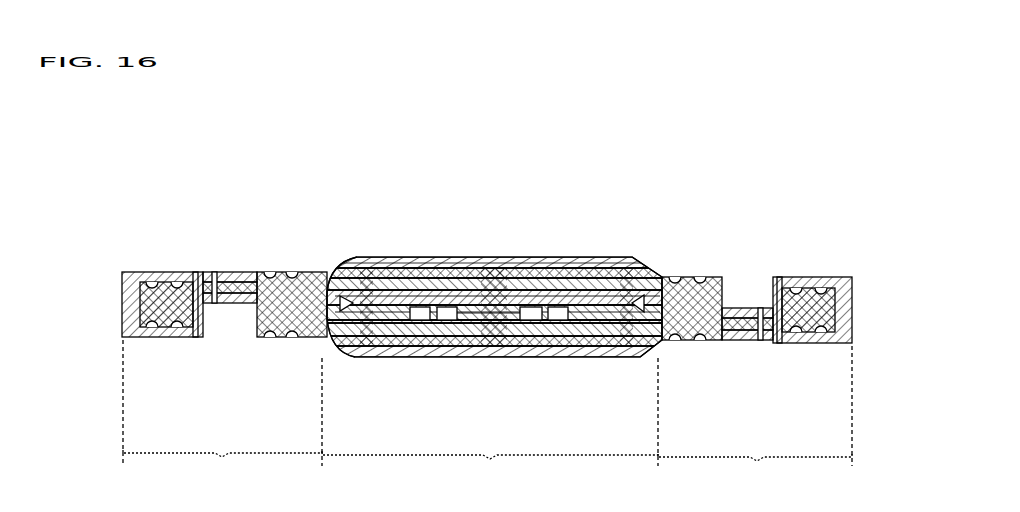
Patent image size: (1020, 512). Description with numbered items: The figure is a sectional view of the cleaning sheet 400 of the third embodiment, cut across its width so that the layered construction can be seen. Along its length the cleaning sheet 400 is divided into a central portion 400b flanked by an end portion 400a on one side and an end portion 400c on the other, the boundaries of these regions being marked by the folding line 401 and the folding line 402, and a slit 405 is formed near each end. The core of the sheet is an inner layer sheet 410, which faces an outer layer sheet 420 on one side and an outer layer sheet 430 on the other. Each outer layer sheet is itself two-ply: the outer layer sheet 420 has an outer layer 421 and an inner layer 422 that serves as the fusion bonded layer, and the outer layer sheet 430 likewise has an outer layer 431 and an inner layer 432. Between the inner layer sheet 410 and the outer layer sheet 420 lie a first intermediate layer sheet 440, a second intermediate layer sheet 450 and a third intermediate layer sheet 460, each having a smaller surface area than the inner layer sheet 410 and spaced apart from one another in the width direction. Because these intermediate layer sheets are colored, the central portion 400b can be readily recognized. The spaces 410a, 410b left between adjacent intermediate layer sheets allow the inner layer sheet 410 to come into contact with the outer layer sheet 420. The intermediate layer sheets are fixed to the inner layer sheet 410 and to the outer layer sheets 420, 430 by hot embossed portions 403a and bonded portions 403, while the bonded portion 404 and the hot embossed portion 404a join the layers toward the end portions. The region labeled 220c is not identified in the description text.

The cleaning sheet 400 is at (785, 257).
The end portion 400a is at (755, 384).
The central portion 400b is at (490, 424).
The end portion 400c is at (222, 376).
The folding line 401 is at (631, 357).
The folding line 402 is at (345, 358).
The bonded portion 403 is at (359, 258).
The hot embossed portion 403a is at (347, 263).
The bonded portion 404 is at (272, 338).
The hot embossed portion 404a is at (252, 313).
The slit 405 is at (215, 271).
The inner layer sheet 410 is at (464, 258).
The space 410a is at (556, 357).
The space 410b is at (412, 357).
The outer layer sheet 420 is at (535, 359).
The outer layer 421 is at (455, 357).
The inner layer 422 is at (432, 357).
The passage 220c is at (493, 357).
The outer layer sheet 430 is at (441, 252).
The outer layer 431 is at (561, 264).
The inner layer 432 is at (582, 269).
The first intermediate layer sheet 440 is at (588, 357).
The second intermediate layer sheet 450 is at (505, 357).
The third intermediate layer sheet 460 is at (395, 262).